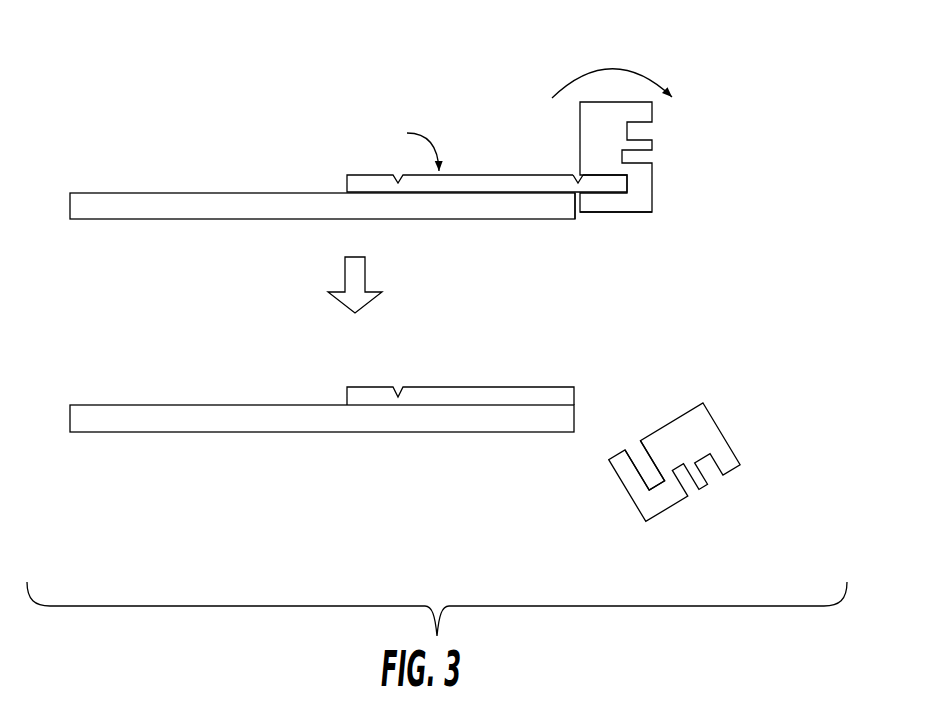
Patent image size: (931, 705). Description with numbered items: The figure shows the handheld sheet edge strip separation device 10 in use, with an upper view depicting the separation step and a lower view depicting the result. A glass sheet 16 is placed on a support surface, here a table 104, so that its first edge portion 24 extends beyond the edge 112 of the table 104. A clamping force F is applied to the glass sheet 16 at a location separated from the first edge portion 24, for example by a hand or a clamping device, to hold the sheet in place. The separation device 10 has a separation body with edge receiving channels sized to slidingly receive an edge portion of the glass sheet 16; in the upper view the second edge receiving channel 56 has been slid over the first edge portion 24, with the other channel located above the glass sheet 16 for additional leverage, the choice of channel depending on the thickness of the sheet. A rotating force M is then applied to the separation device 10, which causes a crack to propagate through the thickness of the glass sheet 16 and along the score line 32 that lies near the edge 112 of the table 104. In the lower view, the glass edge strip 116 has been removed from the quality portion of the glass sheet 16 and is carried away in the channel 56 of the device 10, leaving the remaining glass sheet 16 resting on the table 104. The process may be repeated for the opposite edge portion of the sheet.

The sheet edge strip separation device 10 is at (742, 107).
The table 104 is at (165, 230).
The glass sheet 16 is at (474, 171).
The score line 32 is at (578, 180).
The edge of the table 112 is at (575, 205).
The second edge receiving channel 56 is at (617, 206).
The first edge portion 24 is at (594, 215).
The glass edge strip 116 is at (645, 467).
The clamping force F is at (414, 144).
The rotating force M is at (612, 66).